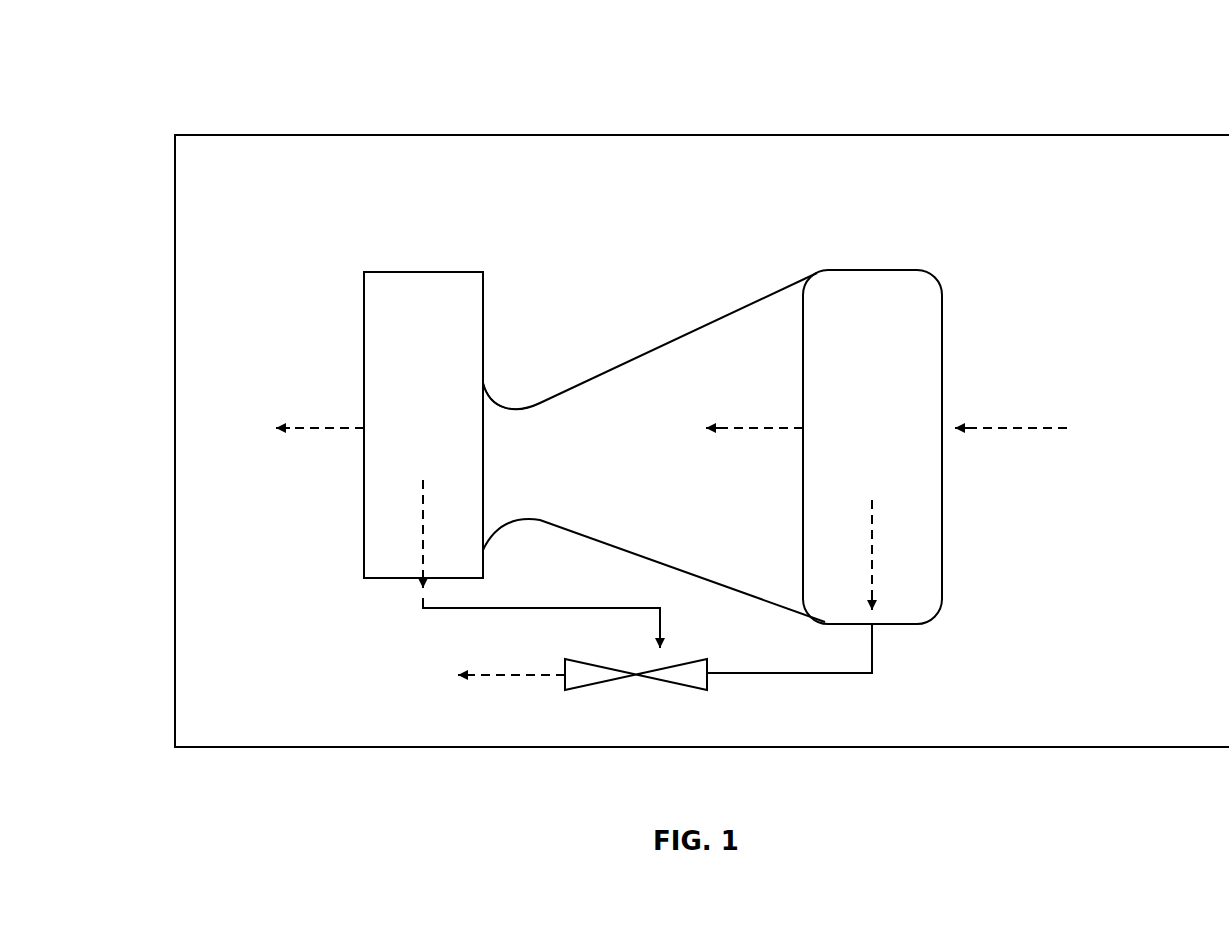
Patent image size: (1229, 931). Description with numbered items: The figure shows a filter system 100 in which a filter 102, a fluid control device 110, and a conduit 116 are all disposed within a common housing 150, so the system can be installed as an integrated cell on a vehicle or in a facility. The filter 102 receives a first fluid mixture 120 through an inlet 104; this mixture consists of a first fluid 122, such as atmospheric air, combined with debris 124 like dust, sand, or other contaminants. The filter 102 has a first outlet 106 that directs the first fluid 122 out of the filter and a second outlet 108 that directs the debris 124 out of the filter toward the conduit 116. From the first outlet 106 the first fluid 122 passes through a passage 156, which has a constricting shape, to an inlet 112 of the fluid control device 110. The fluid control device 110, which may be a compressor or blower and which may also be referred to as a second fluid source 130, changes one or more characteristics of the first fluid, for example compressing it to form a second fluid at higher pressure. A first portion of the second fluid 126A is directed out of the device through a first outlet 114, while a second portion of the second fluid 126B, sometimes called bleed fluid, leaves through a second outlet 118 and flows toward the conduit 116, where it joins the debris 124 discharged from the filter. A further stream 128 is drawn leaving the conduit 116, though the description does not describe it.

The filter system 100 is at (130, 80).
The common housing 150 is at (1005, 130).
The filter 102 is at (905, 260).
The inlet 104 is at (948, 343).
The first outlet 106 is at (800, 355).
The second outlet 108 is at (892, 640).
The fluid control device 110 is at (443, 260).
The inlet 112 is at (492, 416).
The first outlet 114 is at (358, 302).
The conduit 116 is at (618, 700).
The second outlet 118 is at (410, 588).
The first fluid mixture 120 is at (1002, 428).
The first fluid 122 is at (750, 428).
The debris 124 is at (874, 540).
The first portion of the second fluid 126A is at (310, 428).
The second portion of the second fluid 126B is at (425, 500).
The valve outlet stream 128 is at (503, 678).
The second fluid source 130 is at (385, 260).
The passage 156 is at (660, 340).